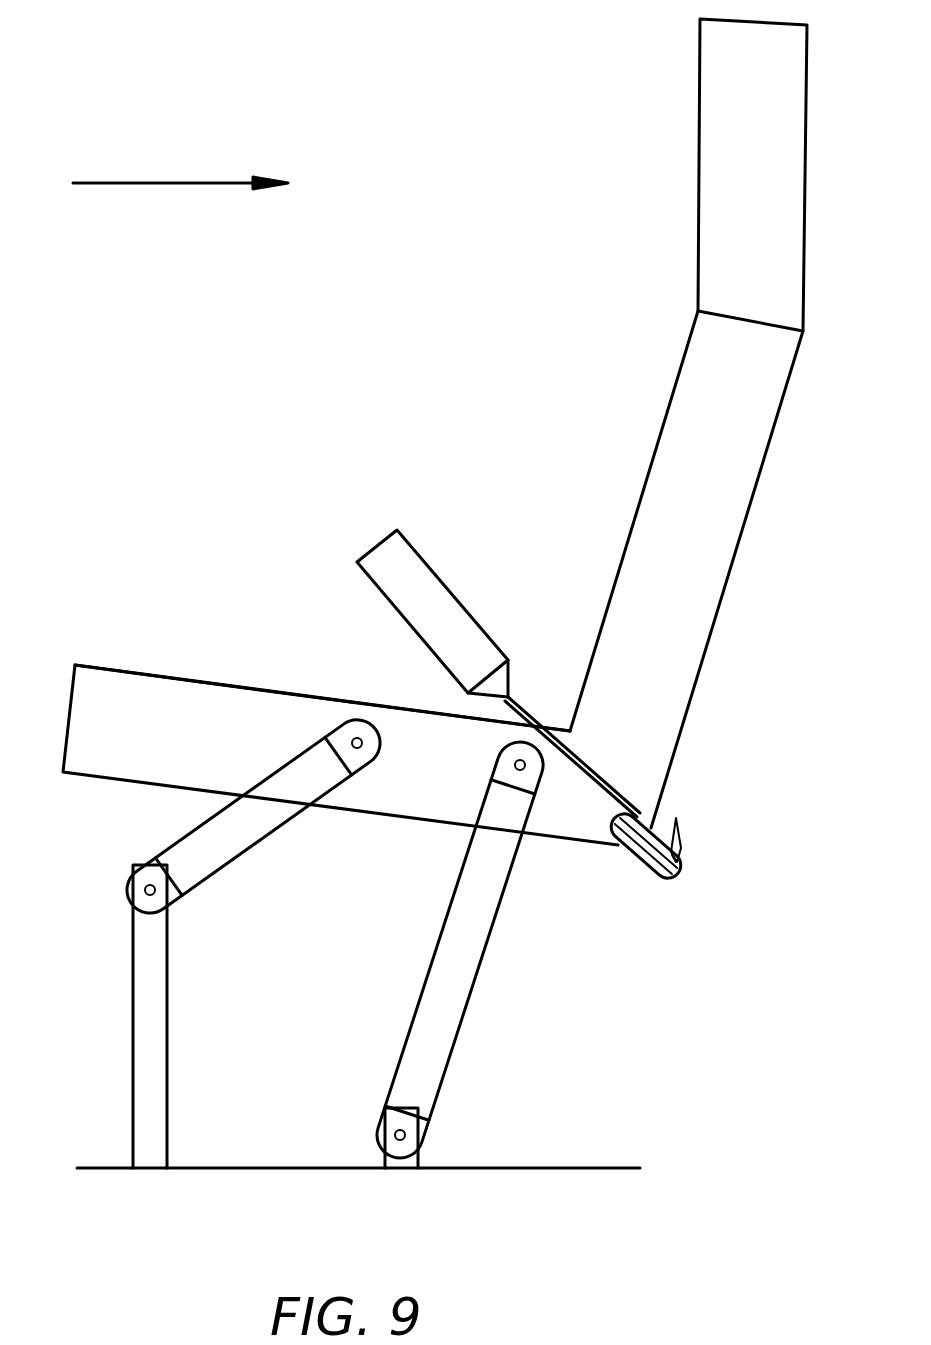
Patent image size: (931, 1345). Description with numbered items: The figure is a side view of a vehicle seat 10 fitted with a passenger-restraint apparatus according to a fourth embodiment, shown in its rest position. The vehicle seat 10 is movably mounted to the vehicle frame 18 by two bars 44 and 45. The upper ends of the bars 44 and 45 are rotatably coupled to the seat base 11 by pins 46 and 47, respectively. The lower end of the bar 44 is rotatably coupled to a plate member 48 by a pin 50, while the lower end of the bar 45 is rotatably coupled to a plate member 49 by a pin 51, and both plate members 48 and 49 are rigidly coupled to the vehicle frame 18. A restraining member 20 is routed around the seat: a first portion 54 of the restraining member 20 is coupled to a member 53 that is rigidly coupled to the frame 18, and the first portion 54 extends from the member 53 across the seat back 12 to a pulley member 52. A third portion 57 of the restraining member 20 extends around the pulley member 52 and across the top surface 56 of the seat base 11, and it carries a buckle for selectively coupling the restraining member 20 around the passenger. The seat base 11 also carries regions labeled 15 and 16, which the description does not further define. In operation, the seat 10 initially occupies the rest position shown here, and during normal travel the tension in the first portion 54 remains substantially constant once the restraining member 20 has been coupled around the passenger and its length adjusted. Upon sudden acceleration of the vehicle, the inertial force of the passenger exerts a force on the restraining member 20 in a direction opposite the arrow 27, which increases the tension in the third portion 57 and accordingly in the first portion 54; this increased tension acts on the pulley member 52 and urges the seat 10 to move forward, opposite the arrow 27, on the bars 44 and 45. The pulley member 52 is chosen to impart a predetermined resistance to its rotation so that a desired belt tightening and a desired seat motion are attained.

The vehicle seat 10 is at (650, 1028).
The seat base 11 is at (69, 705).
The seat back 12 is at (795, 362).
The rear portion of seat cushion 15 is at (456, 715).
The front portion of seat cushion 16 is at (136, 668).
The vehicle frame 18 is at (207, 1170).
The restraining member 20 is at (518, 640).
The arrow 27 is at (166, 183).
The bar 44 is at (440, 941).
The bar 45 is at (248, 838).
The pin 46 is at (514, 765).
The pin 47 is at (352, 740).
The plate member 48 is at (420, 1163).
The plate member 49 is at (134, 996).
The pin 50 is at (394, 1135).
The pin 51 is at (143, 890).
The pulley member 52 is at (637, 870).
The member 53 is at (679, 820).
The first portion 54 is at (678, 846).
The top surface 56 is at (281, 692).
The third portion 57 is at (381, 545).